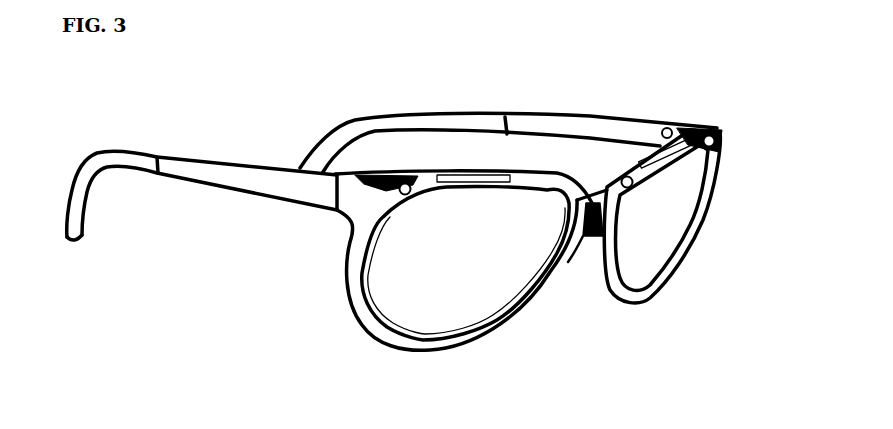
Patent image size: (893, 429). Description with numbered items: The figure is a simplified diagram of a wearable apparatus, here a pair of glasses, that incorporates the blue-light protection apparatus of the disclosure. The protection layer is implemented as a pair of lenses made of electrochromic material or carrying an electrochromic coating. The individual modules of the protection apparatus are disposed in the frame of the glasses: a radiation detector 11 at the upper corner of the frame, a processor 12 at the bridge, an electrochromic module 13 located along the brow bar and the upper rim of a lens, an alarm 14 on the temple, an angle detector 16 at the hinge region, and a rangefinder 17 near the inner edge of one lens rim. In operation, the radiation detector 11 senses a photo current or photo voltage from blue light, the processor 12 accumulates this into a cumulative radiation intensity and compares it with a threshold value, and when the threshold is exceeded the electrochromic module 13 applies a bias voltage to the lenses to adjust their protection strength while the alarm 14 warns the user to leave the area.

The radiation detector 11 is at (712, 135).
The processor 12 is at (593, 240).
The electrochromic module 13 is at (660, 153).
The alarm 14 is at (663, 128).
The angle detector 16 is at (409, 186).
The rangefinder 17 is at (631, 186).